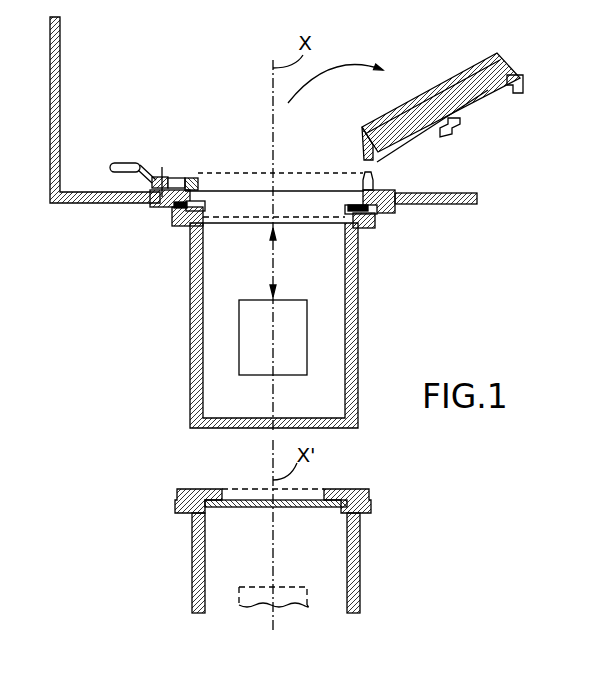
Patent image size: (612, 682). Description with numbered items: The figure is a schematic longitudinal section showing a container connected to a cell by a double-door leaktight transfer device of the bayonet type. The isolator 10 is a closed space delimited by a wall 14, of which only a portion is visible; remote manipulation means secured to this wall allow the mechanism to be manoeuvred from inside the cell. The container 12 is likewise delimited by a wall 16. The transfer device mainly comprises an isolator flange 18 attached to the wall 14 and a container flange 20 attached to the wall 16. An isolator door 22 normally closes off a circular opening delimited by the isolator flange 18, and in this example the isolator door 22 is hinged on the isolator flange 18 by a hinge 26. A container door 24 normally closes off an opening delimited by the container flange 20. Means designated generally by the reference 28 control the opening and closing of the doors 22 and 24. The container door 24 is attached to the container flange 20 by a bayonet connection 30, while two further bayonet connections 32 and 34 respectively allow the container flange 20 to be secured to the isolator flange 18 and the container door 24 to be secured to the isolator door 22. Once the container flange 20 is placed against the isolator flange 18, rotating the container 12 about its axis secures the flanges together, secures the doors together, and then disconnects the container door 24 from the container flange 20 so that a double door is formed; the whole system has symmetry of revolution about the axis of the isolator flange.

The isolator 10 is at (218, 83).
The container 12 is at (249, 280).
The wall 14 is at (56, 73).
The wall 16 is at (190, 367).
The isolator flange 18 is at (158, 208).
The container flange 20 is at (177, 228).
The isolator door 22 is at (408, 133).
The container door 24 is at (467, 73).
The hinge 26 is at (376, 178).
The control means 28 is at (132, 162).
The bayonet connection 30 is at (198, 484).
The bayonet connection 32 is at (378, 217).
The bayonet connection 34 is at (478, 85).